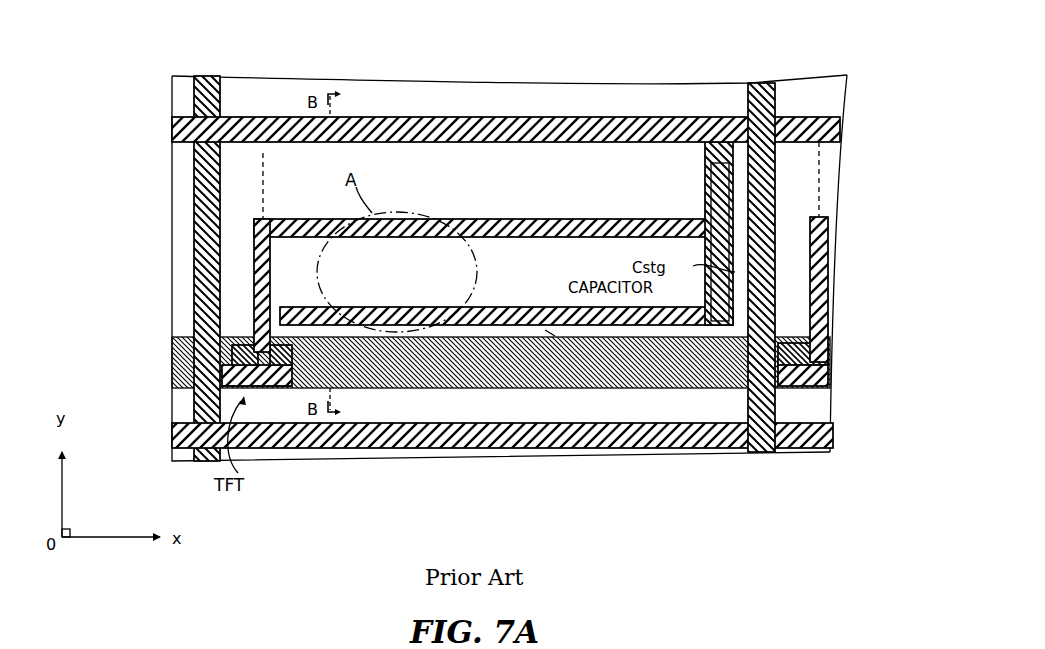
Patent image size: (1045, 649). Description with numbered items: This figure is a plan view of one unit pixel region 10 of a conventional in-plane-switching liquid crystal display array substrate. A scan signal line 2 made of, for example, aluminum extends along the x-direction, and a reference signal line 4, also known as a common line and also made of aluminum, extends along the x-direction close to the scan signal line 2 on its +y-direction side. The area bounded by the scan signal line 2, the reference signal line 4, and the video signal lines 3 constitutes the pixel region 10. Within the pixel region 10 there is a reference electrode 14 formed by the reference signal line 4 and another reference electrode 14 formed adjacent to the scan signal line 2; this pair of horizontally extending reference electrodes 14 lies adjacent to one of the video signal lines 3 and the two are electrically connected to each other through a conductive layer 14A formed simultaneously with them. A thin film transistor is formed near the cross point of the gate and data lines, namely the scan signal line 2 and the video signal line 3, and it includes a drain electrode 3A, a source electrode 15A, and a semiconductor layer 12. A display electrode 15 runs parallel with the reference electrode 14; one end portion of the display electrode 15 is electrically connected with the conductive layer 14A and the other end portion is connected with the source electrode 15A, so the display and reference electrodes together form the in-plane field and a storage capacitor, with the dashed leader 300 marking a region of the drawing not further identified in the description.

The unit pixel region 10 is at (766, 30).
The scan signal line 2 is at (653, 373).
The video signal line 3 is at (194, 194).
The drain electrode 3A is at (333, 391).
The reference signal line 4 is at (625, 117).
The semiconductor layer 12 is at (243, 360).
The reference electrode 14 is at (473, 327).
The conductive layer 14A is at (735, 273).
The display electrode 15 is at (443, 219).
The source electrode 15A is at (240, 336).
The gap / opening region 300 is at (550, 333).